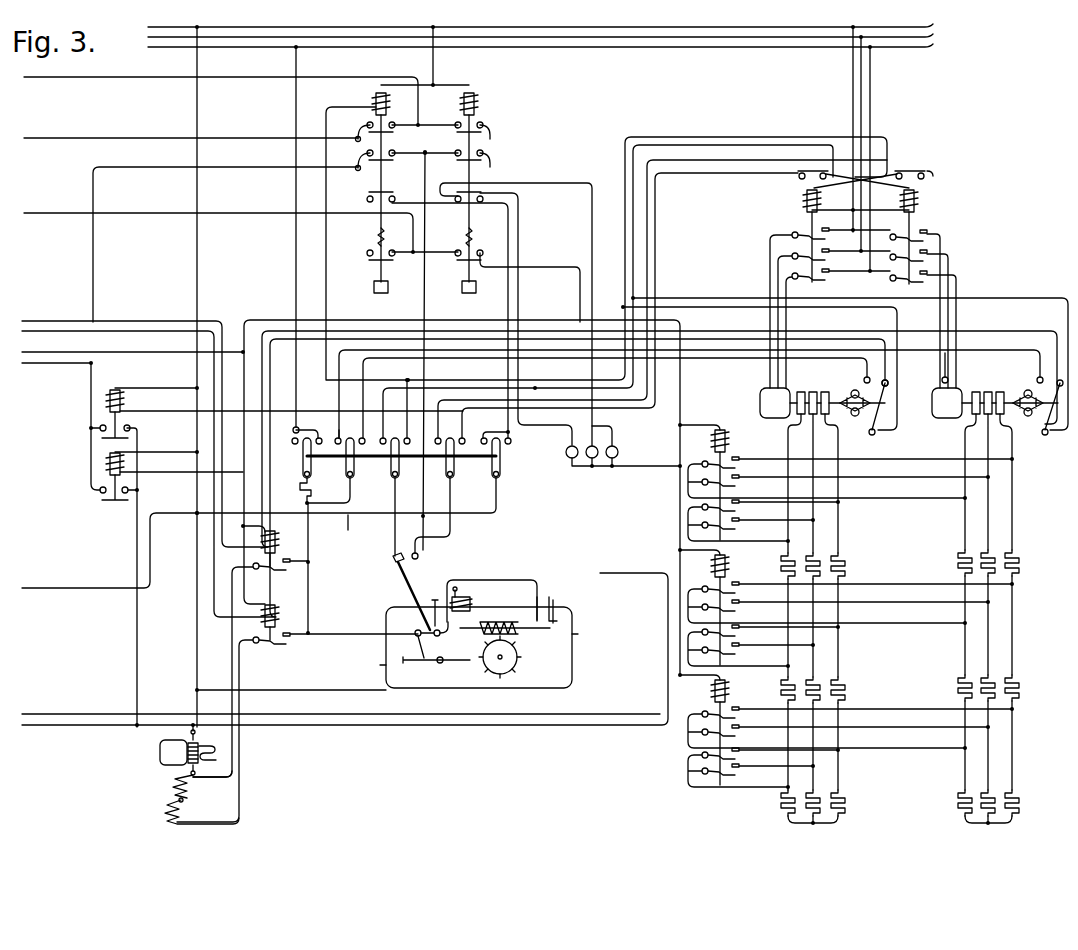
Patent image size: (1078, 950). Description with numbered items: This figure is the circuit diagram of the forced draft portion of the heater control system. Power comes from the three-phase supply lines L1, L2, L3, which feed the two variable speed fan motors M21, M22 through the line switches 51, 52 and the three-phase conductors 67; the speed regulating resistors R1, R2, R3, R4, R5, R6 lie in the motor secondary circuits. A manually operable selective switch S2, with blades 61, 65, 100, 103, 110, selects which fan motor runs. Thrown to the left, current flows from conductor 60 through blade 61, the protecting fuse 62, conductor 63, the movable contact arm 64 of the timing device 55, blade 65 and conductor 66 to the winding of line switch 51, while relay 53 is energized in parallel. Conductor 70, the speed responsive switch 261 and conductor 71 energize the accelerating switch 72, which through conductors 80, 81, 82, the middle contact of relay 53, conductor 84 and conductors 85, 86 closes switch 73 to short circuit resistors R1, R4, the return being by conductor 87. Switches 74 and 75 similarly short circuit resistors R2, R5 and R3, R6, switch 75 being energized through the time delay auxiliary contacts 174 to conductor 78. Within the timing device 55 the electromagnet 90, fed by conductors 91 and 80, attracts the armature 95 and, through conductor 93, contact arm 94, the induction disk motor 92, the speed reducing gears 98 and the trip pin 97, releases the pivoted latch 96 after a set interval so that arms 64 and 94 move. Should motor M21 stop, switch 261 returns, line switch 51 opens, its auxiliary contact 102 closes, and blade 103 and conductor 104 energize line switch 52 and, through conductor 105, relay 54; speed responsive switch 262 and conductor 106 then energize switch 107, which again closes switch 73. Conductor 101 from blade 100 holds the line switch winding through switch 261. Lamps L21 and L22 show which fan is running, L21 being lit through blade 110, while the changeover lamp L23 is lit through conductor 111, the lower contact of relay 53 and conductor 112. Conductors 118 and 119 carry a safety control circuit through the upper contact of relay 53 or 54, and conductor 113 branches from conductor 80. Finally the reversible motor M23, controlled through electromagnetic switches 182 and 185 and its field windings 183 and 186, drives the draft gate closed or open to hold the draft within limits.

The supply line L1 is at (551, 27).
The supply line L2 is at (551, 40).
The supply line L3 is at (551, 52).
The conductor 80 is at (196, 650).
The conductor 60 is at (295, 105).
The conductor 118 is at (50, 80).
The conductor 119 is at (68, 137).
The conductor 84 is at (46, 364).
The conductor 78 is at (50, 212).
The relay 54 is at (376, 100).
The relay 53 is at (475, 100).
The time delay auxiliary contacts 174 is at (456, 262).
The conductor 82 is at (422, 497).
The conductor 112 is at (553, 185).
The conductor 111 is at (520, 418).
The conductor 66 is at (372, 420).
The conductor 105 is at (889, 432).
The blade 103 is at (445, 437).
The conductor 104 is at (655, 210).
The conductor 70 is at (1066, 322).
The three-phase conductors 67 is at (853, 106).
The line switch 52 is at (806, 200).
The line switch 51 is at (916, 200).
The auxiliary contact 102 is at (929, 170).
The conductor 87 is at (672, 514).
The conductor 71 is at (250, 422).
The conductor 106 is at (808, 332).
The conductor 101 is at (980, 360).
The electromagnetic accelerating switch 72 is at (122, 402).
The conductor 85 is at (136, 694).
The electromagnetic switch 107 is at (122, 465).
The conductor 113 is at (40, 587).
The selective switch S2 is at (302, 453).
The blade 61 is at (309, 428).
The blade 100 is at (348, 437).
The blade 65 is at (400, 431).
The blade 110 is at (496, 456).
The circuit protecting fuse 62 is at (300, 492).
The conductor 81 is at (347, 531).
The conductor 63 is at (345, 632).
The electromagnetic switch 185 is at (285, 540).
The electromagnetic switch 182 is at (285, 616).
The conductor 91 is at (264, 690).
The conductor 93 is at (473, 649).
The timing relay 55 is at (492, 601).
The movable contact arm 64 is at (414, 588).
The operating electromagnet 90 is at (463, 596).
The armature 95 is at (436, 600).
The movable contact arm 94 is at (418, 638).
The speed reducing gears 98 is at (512, 636).
The induction disk timing motor 92 is at (547, 627).
The trip pin 97 is at (510, 667).
The pivoted latch 96 is at (412, 664).
The indicating lamp L22 is at (566, 452).
The changeover indicating lamp L23 is at (594, 460).
The indicating lamp L21 is at (618, 452).
The conductor 86 is at (430, 727).
The reversible motor M23 is at (160, 748).
The field winding 186 is at (176, 788).
The field winding 183 is at (180, 812).
The resistance controlling switch 75 is at (726, 450).
The speed resistor controlling switch 74 is at (726, 562).
The electromagnetic switch 73 is at (726, 687).
The electric driving motor M22 is at (768, 420).
The speed responsive switch 262 is at (853, 394).
The electric driving motor M21 is at (945, 420).
The speed responsive switch 261 is at (1026, 394).
The speed regulating resistor R6 is at (842, 554).
The speed regulating resistor R5 is at (842, 678).
The speed regulating resistor R4 is at (842, 791).
The speed regulating resistor R3 is at (1016, 551).
The speed regulating resistor R2 is at (1016, 675).
The speed regulating resistor R1 is at (1016, 791).